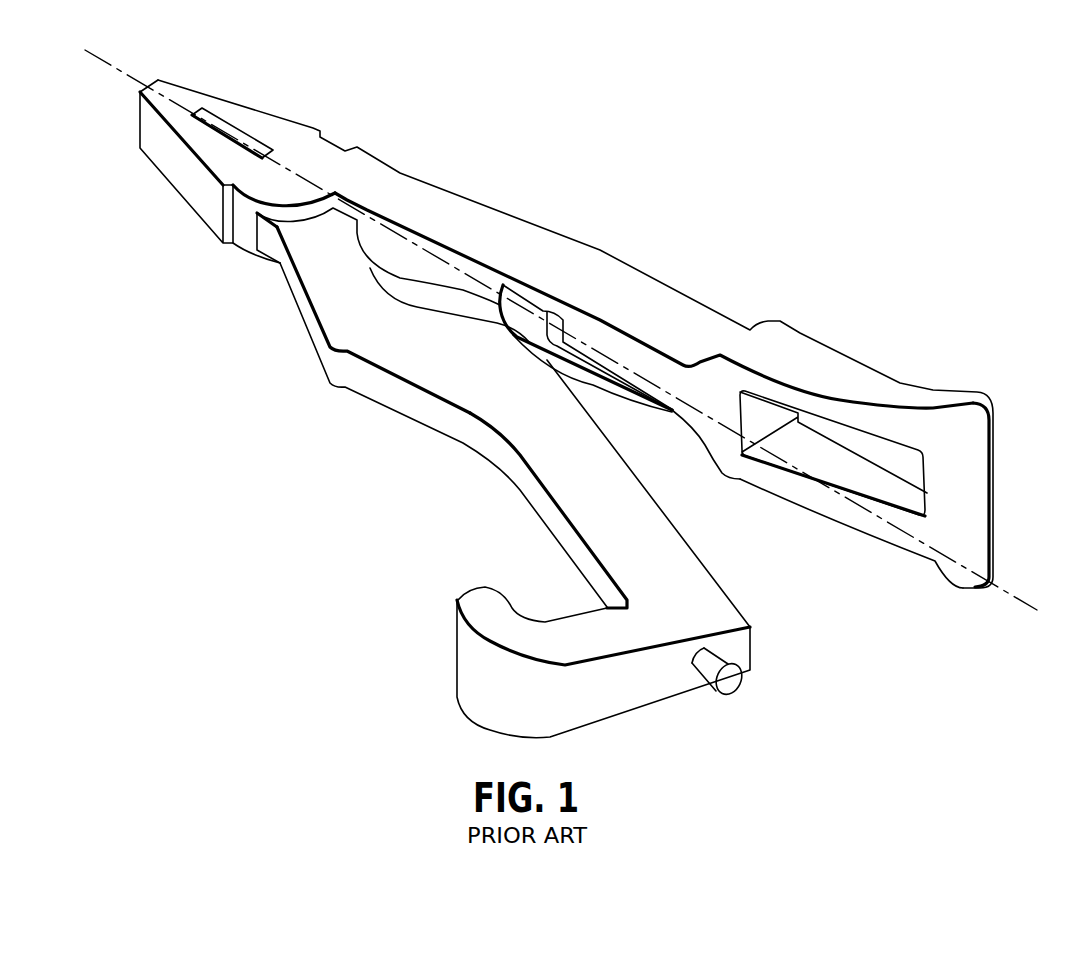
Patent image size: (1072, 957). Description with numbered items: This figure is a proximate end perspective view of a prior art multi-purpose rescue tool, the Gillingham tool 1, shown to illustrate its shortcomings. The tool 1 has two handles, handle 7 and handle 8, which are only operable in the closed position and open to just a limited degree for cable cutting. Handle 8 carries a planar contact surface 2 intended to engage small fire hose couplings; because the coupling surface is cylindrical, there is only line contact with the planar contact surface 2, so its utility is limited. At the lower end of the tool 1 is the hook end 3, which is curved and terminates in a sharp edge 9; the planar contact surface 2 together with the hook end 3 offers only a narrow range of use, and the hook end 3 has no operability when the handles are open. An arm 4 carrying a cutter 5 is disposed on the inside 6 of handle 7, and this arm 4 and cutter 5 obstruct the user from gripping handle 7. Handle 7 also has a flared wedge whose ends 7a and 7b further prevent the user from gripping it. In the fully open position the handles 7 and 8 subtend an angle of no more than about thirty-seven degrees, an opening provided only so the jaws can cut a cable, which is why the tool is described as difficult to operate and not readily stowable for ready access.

The Gillingham tool 1 is at (680, 205).
The planar contact surface 2 is at (510, 468).
The hook end 3 is at (458, 600).
The arm 4 is at (520, 312).
The cutter 5 is at (600, 393).
The inside of handle 6 is at (700, 433).
The handle 7 is at (672, 302).
The flared wedge end 7a is at (977, 402).
The flared wedge end 7b is at (925, 570).
The handle 8 is at (483, 390).
The terminal sharp edge 9 is at (498, 588).